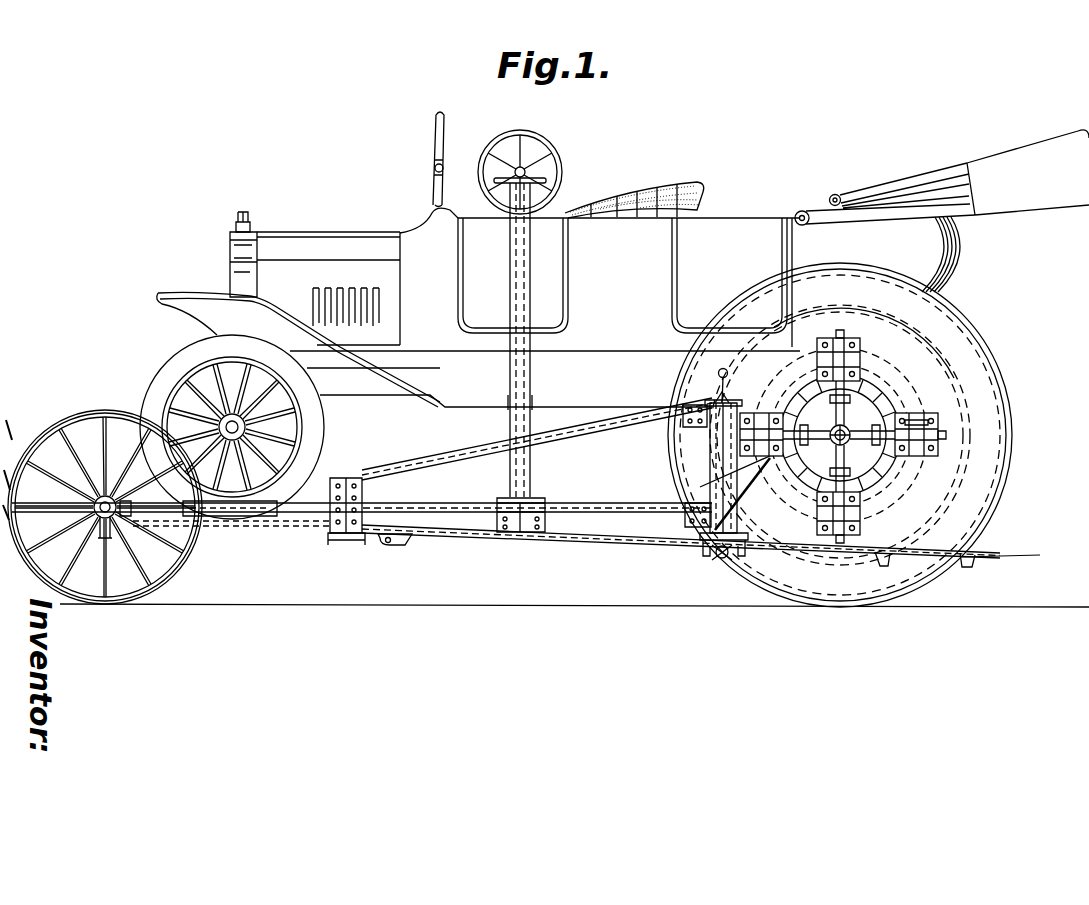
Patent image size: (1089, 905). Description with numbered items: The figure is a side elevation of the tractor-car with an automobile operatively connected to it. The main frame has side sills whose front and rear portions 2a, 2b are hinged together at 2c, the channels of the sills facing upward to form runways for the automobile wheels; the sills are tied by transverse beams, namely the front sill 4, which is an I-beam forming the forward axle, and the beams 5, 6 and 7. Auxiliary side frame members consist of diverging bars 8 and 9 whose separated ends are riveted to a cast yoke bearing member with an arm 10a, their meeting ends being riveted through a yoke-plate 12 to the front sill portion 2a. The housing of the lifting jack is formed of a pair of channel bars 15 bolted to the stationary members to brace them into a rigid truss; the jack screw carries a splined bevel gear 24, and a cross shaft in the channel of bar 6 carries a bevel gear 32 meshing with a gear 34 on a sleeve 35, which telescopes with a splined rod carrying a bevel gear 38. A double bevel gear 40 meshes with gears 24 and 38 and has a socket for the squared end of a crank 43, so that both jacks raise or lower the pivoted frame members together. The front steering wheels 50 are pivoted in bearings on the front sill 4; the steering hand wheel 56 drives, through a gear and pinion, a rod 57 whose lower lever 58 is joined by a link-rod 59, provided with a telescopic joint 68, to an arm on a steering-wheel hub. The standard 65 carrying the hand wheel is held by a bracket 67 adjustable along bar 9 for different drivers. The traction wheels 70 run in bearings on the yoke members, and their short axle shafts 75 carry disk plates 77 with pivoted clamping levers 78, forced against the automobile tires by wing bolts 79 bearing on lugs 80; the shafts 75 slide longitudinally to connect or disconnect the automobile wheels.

The front side sill portion 2a is at (182, 553).
The rear side sill portion 2b is at (880, 548).
The hinge 2c is at (392, 546).
The front sill 4 is at (93, 560).
The transverse beam 5 is at (350, 536).
The transverse frame bar 6 is at (700, 548).
The transverse beam 7 is at (975, 558).
The diverging bar 8 is at (467, 458).
The diverging bar 9 is at (624, 515).
The yoke bearing member arm 10a is at (758, 402).
The yoke-plate 12 is at (348, 480).
The channel bars 15 is at (708, 472).
The bevel gear 24 is at (712, 400).
The bevel gear 32 is at (725, 565).
The bevel gear 34 is at (718, 560).
The sleeve 35 is at (700, 503).
The bevel gear 38 is at (684, 407).
The double bevel gear 40 is at (702, 408).
The crank 43 is at (724, 371).
The front steering wheel 50 is at (100, 411).
The steering hand wheel 56 is at (548, 162).
The rod 57 is at (530, 257).
The lever 58 is at (508, 535).
The link-rod 59 is at (313, 515).
The standard 65 is at (531, 350).
The bracket 67 is at (560, 540).
The telescopic joint 68 is at (267, 518).
The traction wheel 70 is at (1012, 440).
The axle shaft 75 is at (843, 432).
The disk plate 77 is at (896, 480).
The clamping lever 78 is at (936, 452).
The wing bolt 79 is at (946, 435).
The lug 80 is at (918, 420).